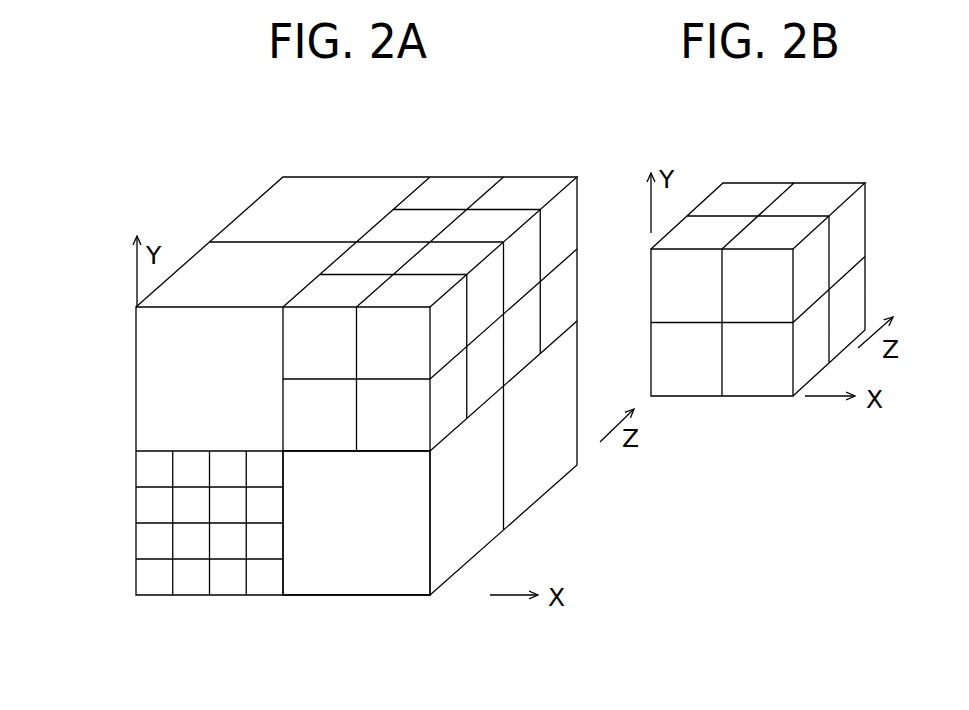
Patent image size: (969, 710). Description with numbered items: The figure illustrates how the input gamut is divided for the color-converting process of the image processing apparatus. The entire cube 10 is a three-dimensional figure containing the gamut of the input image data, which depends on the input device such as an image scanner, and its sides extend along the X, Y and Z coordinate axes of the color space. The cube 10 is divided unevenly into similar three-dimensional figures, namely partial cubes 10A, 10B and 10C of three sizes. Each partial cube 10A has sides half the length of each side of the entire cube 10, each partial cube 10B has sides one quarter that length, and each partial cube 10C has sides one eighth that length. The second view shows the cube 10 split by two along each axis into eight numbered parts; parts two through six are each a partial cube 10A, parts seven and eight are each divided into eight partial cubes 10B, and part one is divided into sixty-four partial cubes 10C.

In FIG. 2A, the cube 10 is at (97, 283).
In FIG. 2B, the cube 10 is at (632, 181).
In FIG. 2A, the partial cubes 10A is at (372, 588).
In FIG. 2A, the partial cubes 10B is at (462, 188).
In FIG. 2A, the partial cubes 10C is at (153, 582).